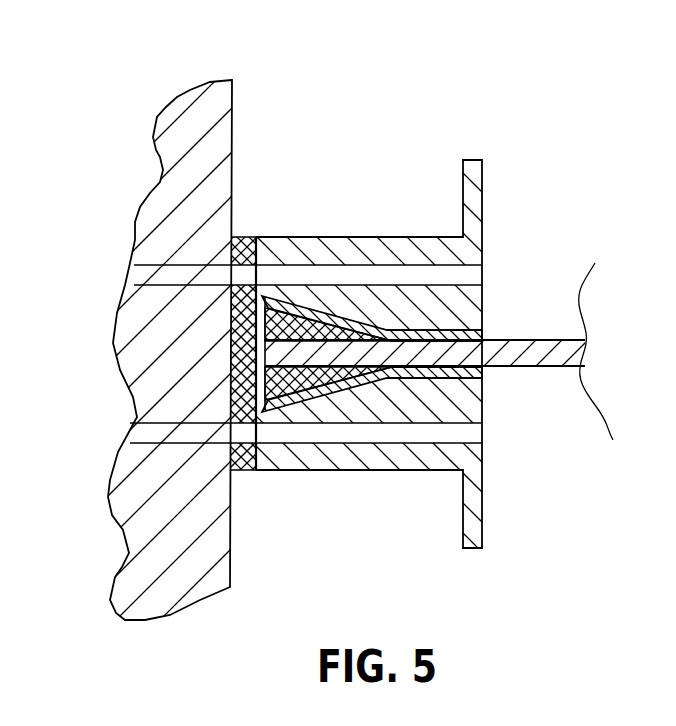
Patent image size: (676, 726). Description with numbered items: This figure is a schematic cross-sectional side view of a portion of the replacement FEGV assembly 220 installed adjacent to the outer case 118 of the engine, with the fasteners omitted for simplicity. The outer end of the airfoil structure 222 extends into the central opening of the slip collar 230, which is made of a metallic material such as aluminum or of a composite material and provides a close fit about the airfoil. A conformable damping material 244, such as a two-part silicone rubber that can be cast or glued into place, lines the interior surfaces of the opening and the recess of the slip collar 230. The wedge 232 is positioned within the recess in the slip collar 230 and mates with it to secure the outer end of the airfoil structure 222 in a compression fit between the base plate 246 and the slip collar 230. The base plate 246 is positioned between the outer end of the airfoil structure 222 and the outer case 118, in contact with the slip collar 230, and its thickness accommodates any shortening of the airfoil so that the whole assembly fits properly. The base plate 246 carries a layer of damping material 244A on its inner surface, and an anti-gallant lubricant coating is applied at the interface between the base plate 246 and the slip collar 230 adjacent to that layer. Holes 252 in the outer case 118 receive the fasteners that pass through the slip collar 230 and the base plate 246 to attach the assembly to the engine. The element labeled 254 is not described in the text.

The outer case 118 is at (233, 128).
The FEGV assembly 220 is at (338, 363).
The airfoil structure 222 is at (537, 353).
The slip collar 230 is at (401, 477).
The wedge 232 is at (297, 287).
The damping material 244 is at (425, 330).
The layer of damping material 244A is at (290, 322).
The base plate 246 is at (247, 477).
The holes 252 is at (178, 264).
The plate 254 is at (258, 471).